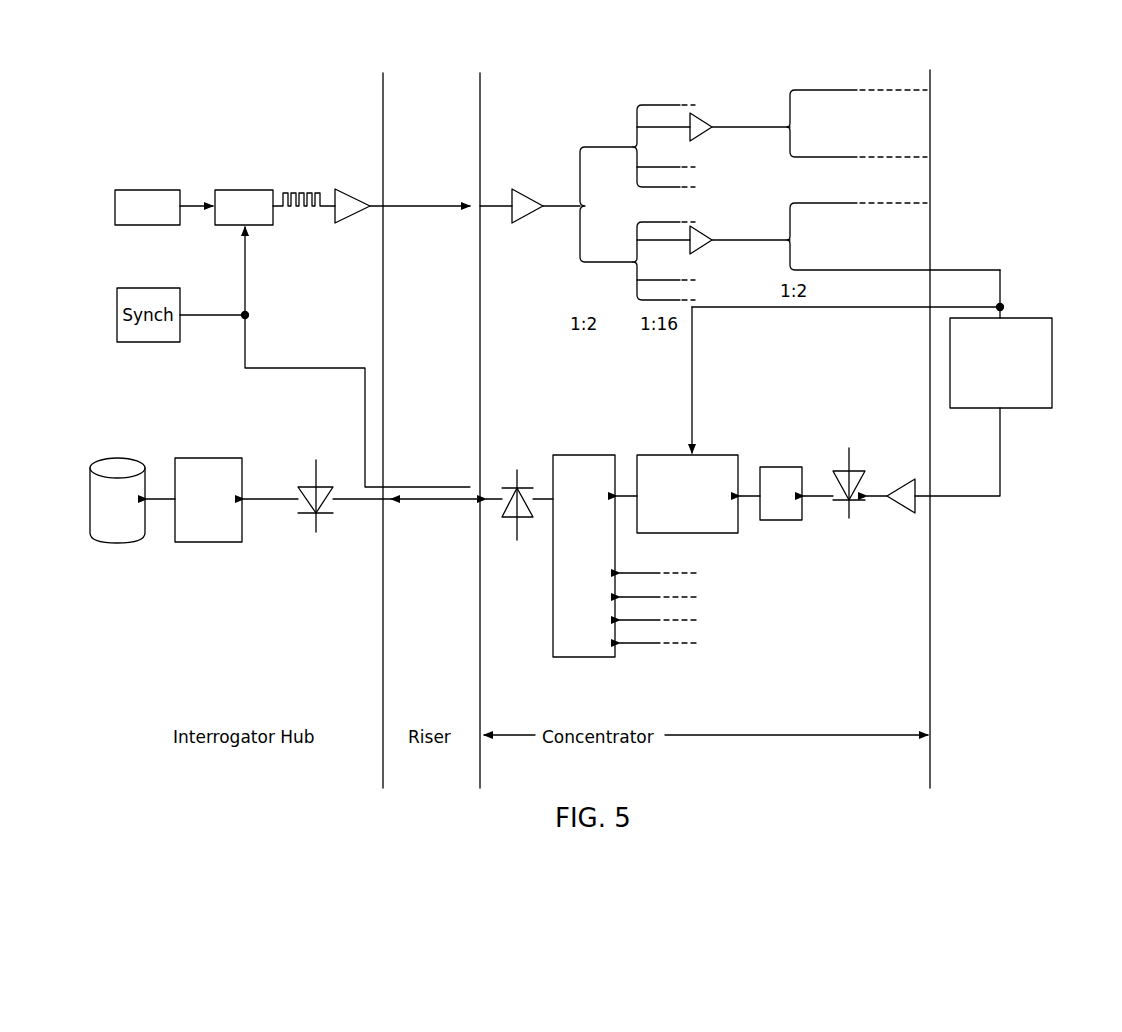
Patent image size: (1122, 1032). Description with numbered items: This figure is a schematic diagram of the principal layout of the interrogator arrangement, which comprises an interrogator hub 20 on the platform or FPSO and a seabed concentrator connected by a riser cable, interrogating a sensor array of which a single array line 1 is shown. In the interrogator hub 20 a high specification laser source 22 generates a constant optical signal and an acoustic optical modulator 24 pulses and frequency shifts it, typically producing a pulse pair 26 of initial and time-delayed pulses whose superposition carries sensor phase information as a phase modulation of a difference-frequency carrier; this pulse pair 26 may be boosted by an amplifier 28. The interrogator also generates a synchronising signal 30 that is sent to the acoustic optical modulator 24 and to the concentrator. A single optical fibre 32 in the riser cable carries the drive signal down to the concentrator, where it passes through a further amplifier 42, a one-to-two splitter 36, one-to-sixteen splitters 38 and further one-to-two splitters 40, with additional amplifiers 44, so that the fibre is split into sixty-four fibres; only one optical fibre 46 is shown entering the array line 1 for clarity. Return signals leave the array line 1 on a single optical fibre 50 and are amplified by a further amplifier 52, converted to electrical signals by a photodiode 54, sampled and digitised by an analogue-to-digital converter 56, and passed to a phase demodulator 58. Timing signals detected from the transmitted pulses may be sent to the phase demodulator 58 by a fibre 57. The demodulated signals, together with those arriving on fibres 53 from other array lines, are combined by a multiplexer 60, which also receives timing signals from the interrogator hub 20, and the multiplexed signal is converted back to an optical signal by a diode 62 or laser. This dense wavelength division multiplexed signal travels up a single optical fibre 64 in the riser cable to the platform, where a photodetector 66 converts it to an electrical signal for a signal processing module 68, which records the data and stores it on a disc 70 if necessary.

The array line 1 is at (1052, 350).
The interrogator hub 20 is at (130, 134).
The laser source 22 is at (143, 190).
The acoustic optical modulator 24 is at (250, 190).
The pulse pair 26 is at (325, 186).
The amplifier 28 is at (350, 189).
The synchronising signal 30 is at (280, 372).
The optical fibre 32 is at (436, 206).
The 1:2 splitter 36 is at (582, 142).
The 1:16 splitters 38 is at (640, 104).
The further 1:2 splitters 40 is at (797, 86).
The amplifier 42 is at (521, 189).
The amplifier 44 is at (700, 113).
The optical fibre 46 is at (1003, 285).
The optical fibre 50 is at (1000, 462).
The amplifier 52 is at (898, 482).
The fibres 53 is at (650, 597).
The photodiode 54 is at (855, 471).
The A/D converter 56 is at (778, 467).
The fibre 57 is at (808, 309).
The phase demodulator 58 is at (655, 455).
The multiplexer 60 is at (553, 606).
The diode 62 is at (508, 520).
The optical fibre 64 is at (412, 495).
The photodetector 66 is at (322, 485).
The signal processing module 68 is at (195, 458).
The disc 70 is at (118, 543).